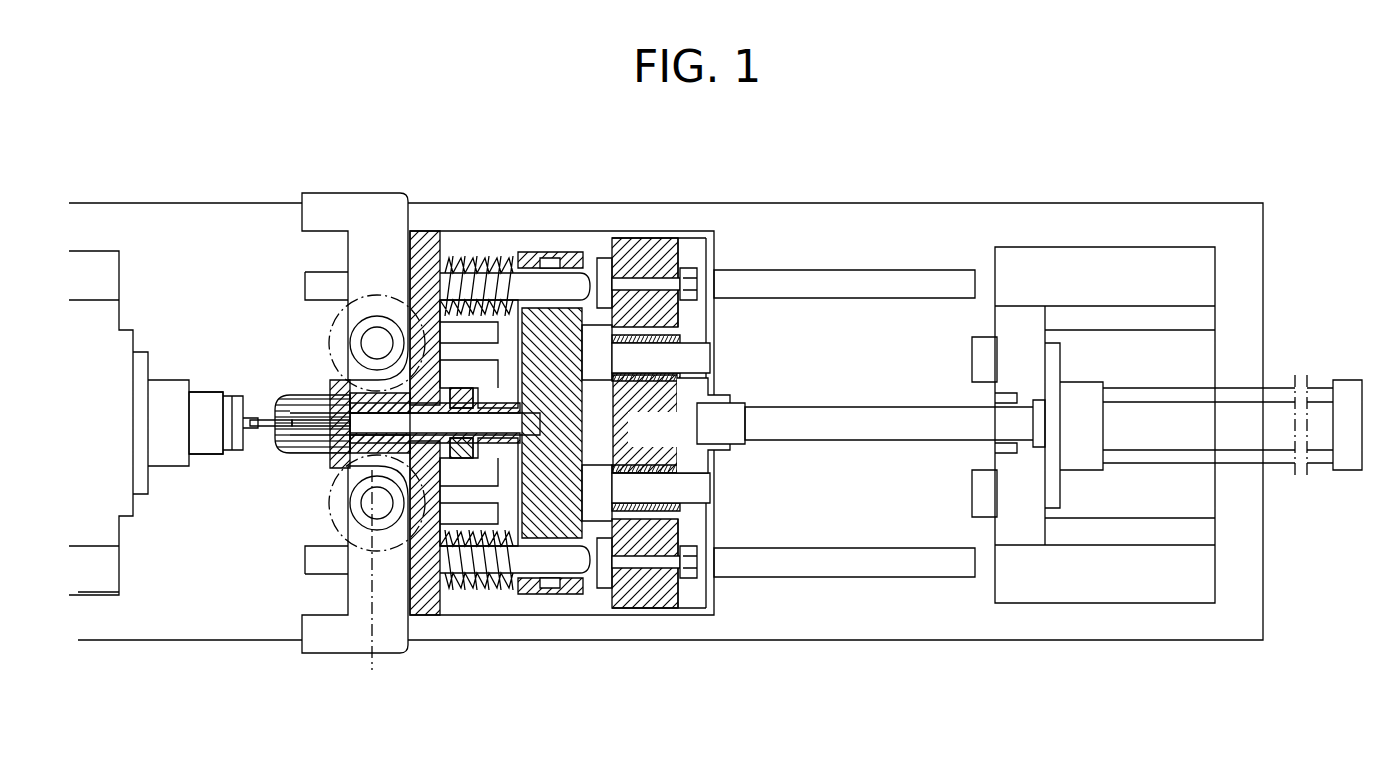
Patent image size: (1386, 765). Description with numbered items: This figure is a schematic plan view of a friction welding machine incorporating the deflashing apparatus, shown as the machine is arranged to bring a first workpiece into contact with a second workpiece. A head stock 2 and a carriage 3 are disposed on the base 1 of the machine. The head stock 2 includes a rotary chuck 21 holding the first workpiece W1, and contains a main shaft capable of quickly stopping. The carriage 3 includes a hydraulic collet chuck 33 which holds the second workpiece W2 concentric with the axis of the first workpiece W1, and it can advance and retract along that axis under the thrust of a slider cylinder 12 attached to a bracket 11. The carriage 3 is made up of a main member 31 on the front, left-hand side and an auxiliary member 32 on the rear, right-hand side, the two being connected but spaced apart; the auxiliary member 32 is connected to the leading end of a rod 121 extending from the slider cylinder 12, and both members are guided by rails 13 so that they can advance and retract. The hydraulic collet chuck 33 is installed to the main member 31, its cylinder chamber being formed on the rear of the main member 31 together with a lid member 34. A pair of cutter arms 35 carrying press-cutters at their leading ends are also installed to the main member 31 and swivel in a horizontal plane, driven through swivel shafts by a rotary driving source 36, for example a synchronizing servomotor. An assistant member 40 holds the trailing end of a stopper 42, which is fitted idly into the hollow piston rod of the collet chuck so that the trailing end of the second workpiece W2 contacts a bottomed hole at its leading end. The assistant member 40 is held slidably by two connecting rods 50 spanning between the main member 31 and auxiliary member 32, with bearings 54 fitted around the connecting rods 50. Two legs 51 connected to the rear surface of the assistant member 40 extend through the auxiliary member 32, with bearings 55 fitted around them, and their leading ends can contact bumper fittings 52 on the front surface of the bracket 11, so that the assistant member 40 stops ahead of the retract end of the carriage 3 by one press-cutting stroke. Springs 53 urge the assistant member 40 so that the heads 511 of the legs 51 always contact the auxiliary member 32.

The base 1 is at (884, 235).
The head stock 2 is at (100, 320).
The carriage 3 is at (614, 238).
The bracket 11 is at (1036, 275).
The slider cylinder 12 is at (1273, 395).
The rails 13 is at (801, 285).
The rotary chuck 21 is at (228, 452).
The main member 31 is at (423, 240).
The auxiliary member 32 is at (665, 250).
The hydraulic collet chuck 33 is at (308, 395).
The lid member 34 is at (475, 480).
The cutter arms 35 is at (371, 215).
The rotary driving source 36 is at (333, 372).
The assistant member 40 is at (580, 278).
The stopper 42 is at (556, 410).
The connecting rods 50 is at (602, 258).
The legs 51 is at (712, 362).
The bumper fittings 52 is at (972, 358).
The springs 53 is at (463, 262).
The bearings 54 is at (545, 252).
The bearings 55 is at (682, 338).
The rod 121 is at (815, 423).
The heads 511 is at (605, 458).
The first workpiece W1 is at (255, 420).
The second workpiece W2 is at (265, 428).